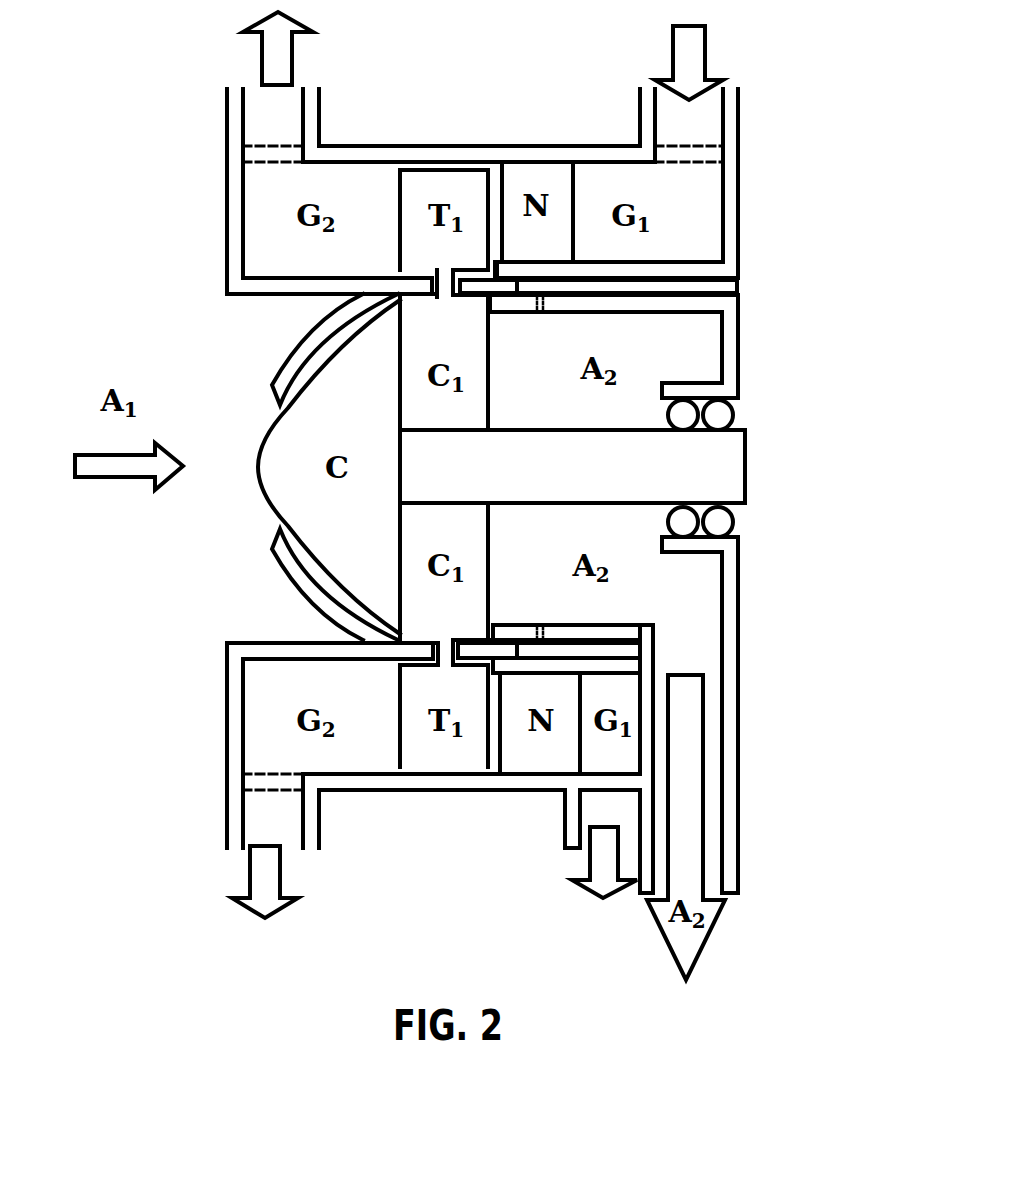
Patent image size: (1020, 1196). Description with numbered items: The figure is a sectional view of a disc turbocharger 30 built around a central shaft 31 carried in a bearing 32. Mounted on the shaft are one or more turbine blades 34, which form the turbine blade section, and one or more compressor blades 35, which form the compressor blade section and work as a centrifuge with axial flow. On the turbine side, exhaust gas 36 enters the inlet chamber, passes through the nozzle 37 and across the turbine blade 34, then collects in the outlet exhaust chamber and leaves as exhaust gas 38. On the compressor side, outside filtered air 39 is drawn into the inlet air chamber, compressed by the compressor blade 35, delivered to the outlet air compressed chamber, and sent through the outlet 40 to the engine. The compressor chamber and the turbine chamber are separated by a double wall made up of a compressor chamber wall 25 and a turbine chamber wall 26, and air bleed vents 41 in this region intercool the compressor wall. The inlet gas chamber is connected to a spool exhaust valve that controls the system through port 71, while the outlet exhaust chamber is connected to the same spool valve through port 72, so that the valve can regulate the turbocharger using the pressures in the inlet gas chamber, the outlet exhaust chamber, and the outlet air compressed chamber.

The compressor chamber wall 25 is at (683, 310).
The turbine chamber wall 26 is at (677, 262).
The disc turbocharger 30 is at (844, 152).
The shaft 31 is at (745, 455).
The bearing 32 is at (733, 520).
The turbine blade 34 is at (420, 168).
The compressor blade 35 is at (398, 357).
The exhaust gas 36 is at (705, 43).
The nozzle 37 is at (574, 177).
The exhaust gas 38 is at (292, 70).
The outside filtered air 39 is at (117, 455).
The outlet 40 is at (690, 968).
The air bleed vents 41 is at (540, 310).
The port 71 is at (582, 884).
The port 72 is at (280, 887).